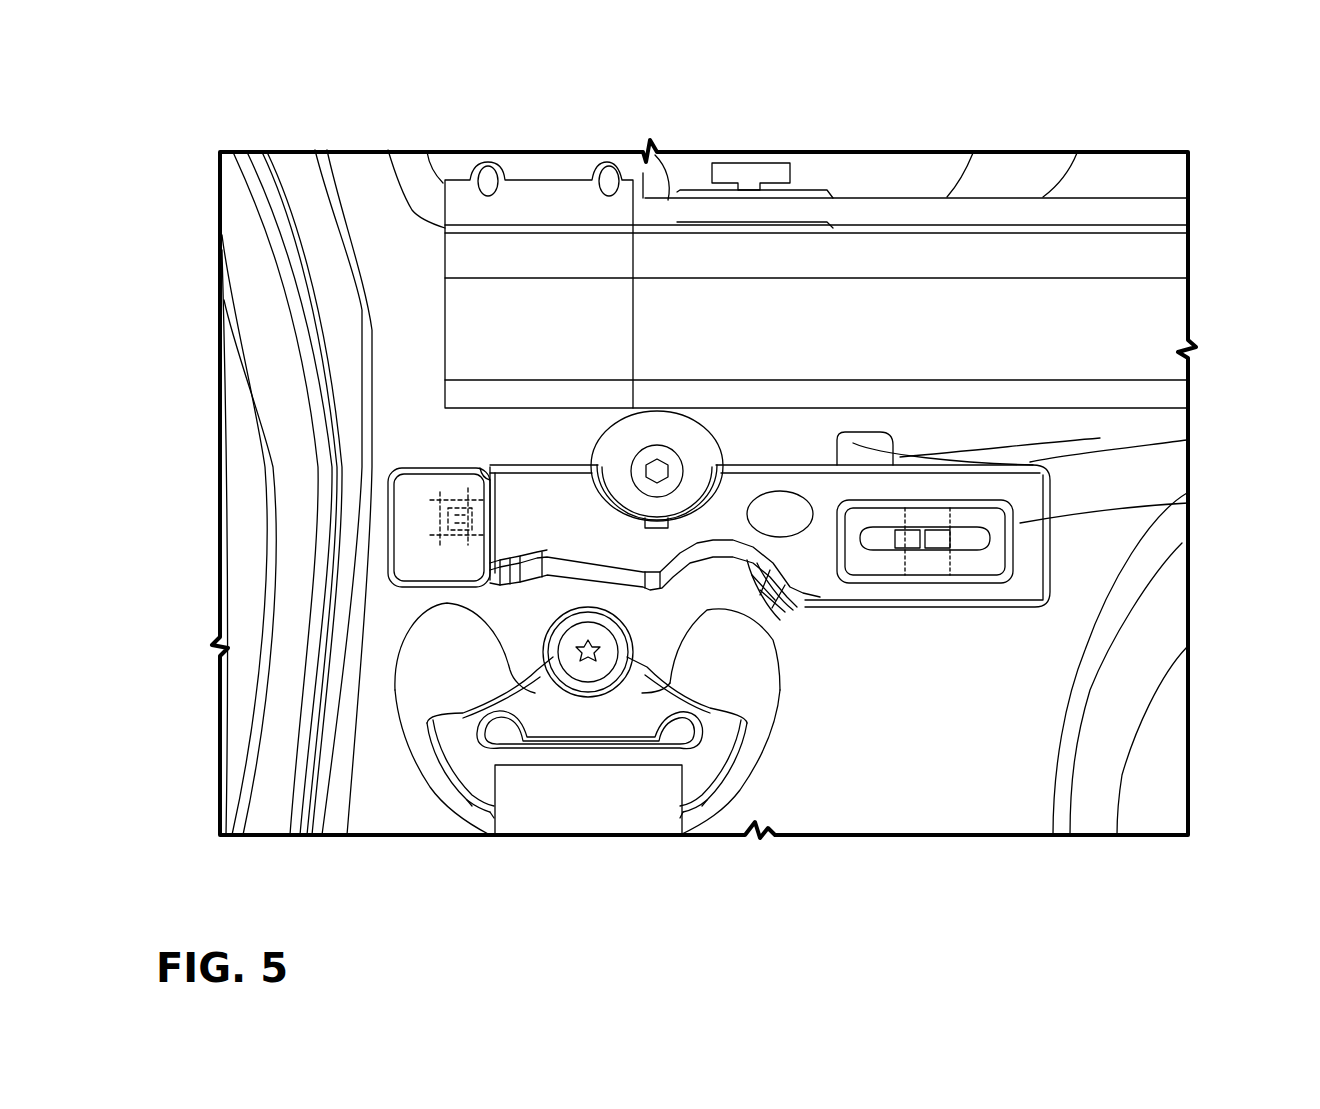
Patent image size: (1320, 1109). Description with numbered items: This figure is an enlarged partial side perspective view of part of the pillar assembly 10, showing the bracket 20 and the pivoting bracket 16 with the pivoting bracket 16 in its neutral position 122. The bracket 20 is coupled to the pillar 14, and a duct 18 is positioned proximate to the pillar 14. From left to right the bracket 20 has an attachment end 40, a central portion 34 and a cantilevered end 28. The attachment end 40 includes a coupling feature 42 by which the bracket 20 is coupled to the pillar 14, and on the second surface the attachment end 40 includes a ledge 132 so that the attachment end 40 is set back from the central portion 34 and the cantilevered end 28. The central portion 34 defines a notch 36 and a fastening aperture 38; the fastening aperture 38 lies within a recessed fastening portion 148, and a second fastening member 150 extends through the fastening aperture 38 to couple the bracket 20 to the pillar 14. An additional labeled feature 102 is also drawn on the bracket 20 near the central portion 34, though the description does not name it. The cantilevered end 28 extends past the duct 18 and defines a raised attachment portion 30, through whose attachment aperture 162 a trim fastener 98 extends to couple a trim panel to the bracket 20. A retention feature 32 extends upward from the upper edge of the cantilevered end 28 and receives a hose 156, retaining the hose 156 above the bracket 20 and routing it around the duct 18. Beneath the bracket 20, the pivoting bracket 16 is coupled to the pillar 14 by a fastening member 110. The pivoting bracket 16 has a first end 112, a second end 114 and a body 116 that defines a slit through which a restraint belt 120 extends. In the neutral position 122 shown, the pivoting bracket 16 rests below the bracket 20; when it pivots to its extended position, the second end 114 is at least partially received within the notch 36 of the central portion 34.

The pillar assembly 10 is at (270, 215).
The pillar 14 is at (388, 337).
The pivoting bracket 16 is at (455, 808).
The duct 18 is at (1097, 478).
The bracket 20 is at (395, 467).
The cantilevered end 28 is at (1020, 523).
The raised attachment portion 30 is at (1013, 575).
The retention feature 32 is at (893, 433).
The central portion 34 is at (610, 543).
The notch 36 is at (770, 603).
The fastening aperture 38 is at (673, 455).
The attachment end 40 is at (390, 560).
The coupling feature 42 is at (492, 530).
The trim fastener 98 is at (932, 583).
The aperture 102 is at (783, 491).
The fastening member 110 is at (557, 657).
The first end 112 is at (433, 680).
The second end 114 is at (757, 663).
The body 116 is at (733, 770).
The restraint belt 120 is at (580, 800).
The neutral position 122 is at (490, 617).
The ledge 132 is at (480, 478).
The fastening portion 148 is at (705, 452).
The second fastening member 150 is at (657, 470).
The hose 156 is at (1100, 440).
The attachment aperture 162 is at (882, 583).